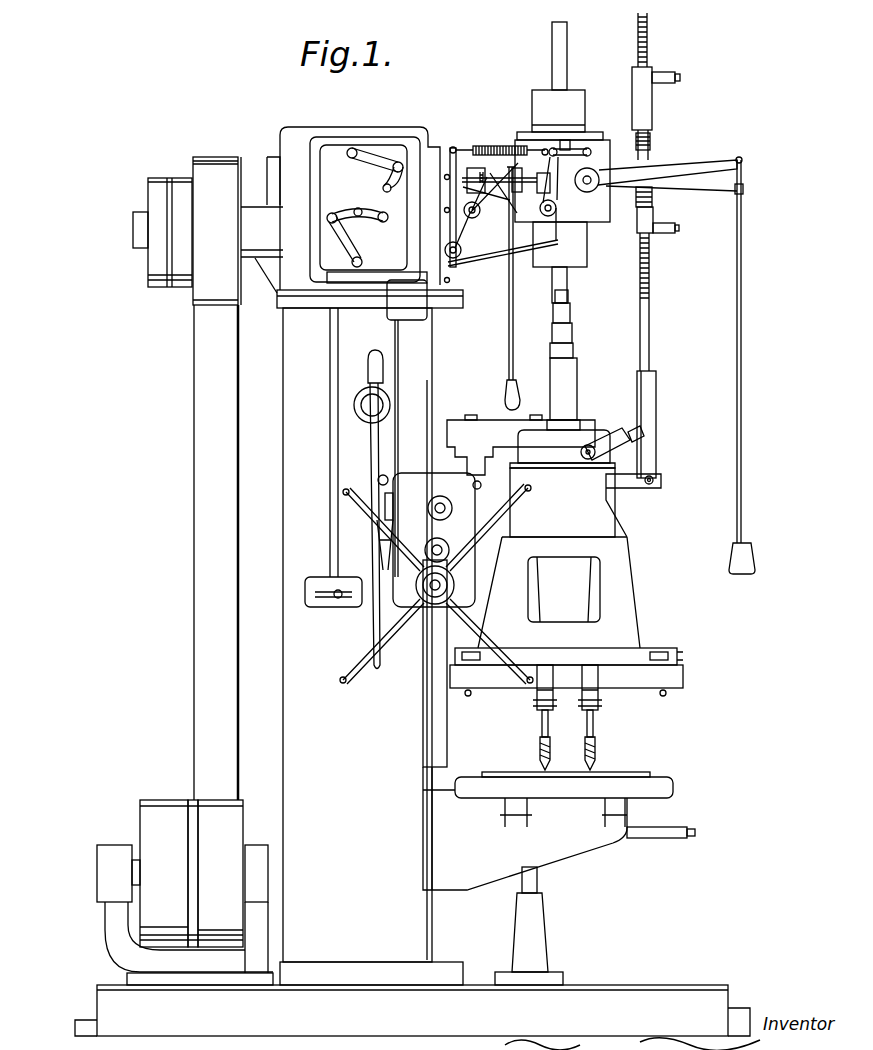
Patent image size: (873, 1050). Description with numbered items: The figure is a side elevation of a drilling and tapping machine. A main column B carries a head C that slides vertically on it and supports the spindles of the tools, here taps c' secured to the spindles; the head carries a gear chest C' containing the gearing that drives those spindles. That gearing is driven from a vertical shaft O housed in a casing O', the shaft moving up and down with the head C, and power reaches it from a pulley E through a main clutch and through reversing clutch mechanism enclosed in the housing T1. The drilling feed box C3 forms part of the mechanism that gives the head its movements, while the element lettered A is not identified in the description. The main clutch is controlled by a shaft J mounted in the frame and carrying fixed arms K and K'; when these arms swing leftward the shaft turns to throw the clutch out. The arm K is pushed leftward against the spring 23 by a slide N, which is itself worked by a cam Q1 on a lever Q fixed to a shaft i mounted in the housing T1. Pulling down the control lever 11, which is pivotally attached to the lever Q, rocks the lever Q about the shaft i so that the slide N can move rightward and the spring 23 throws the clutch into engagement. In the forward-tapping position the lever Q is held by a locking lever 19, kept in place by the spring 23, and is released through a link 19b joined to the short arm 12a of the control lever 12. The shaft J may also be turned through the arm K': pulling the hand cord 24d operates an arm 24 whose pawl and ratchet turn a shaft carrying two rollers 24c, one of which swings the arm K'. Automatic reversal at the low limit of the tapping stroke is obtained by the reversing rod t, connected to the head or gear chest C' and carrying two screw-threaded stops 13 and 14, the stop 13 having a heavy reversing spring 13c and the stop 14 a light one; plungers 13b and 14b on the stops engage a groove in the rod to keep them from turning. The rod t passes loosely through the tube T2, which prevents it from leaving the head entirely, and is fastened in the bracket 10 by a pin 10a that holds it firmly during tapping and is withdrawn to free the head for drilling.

The pulley E is at (238, 158).
The head A is at (338, 145).
The main column B is at (412, 672).
The drilling feed box C3 is at (436, 578).
The vertical shaft O is at (581, 56).
The housing T1 is at (537, 143).
The locking lever 19 is at (565, 147).
The link 19b is at (588, 153).
The lever Q is at (567, 173).
The cam Q1 is at (538, 212).
The shaft i is at (587, 192).
The control lever 12 is at (683, 165).
The control lever 11 is at (711, 184).
The reversing rod t is at (647, 55).
The stop 13 is at (652, 110).
The plunger 13b is at (680, 77).
The short arm 12a is at (650, 143).
The heavy reversing spring 13c is at (652, 190).
The plunger 14b is at (668, 233).
The stop 14 is at (650, 240).
The tube T2 is at (656, 422).
The bracket 10 is at (661, 479).
The pin 10a is at (650, 485).
The slide N is at (455, 160).
The spring 23 is at (495, 146).
The arm K' is at (490, 198).
The lever K is at (465, 235).
The shaft J is at (503, 263).
The arm 24 is at (513, 228).
The rollers 24c is at (553, 213).
The hand cord 24d is at (509, 352).
The casing O' is at (581, 360).
The gear chest C' is at (577, 481).
The head C is at (566, 616).
The taps c' is at (565, 663).